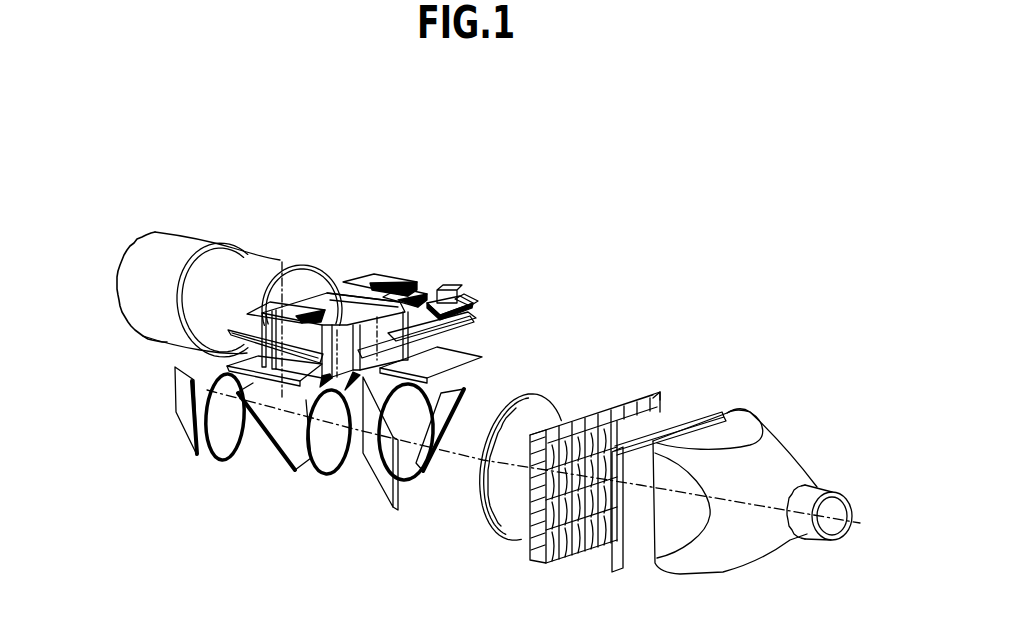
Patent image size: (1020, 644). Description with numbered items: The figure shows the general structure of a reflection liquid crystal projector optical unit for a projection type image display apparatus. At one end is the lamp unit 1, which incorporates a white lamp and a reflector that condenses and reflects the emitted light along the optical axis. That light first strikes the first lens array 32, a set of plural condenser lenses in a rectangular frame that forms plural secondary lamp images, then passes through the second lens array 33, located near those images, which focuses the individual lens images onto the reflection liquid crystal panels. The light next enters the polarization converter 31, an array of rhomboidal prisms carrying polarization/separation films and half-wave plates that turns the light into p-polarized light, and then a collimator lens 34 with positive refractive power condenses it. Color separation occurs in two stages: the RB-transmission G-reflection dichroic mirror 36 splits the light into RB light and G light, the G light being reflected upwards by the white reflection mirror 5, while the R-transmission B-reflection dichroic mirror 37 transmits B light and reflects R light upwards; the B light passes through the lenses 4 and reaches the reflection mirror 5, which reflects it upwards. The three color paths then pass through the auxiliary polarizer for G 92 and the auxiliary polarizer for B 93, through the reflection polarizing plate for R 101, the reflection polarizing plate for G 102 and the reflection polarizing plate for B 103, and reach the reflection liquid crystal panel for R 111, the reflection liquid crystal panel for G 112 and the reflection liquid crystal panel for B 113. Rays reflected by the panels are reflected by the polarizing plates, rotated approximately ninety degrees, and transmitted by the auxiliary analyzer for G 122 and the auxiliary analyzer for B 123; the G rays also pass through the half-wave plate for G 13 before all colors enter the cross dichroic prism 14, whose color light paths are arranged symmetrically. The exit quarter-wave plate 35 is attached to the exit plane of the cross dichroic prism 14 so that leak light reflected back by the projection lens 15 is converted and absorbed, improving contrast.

The lamp unit 1 is at (778, 420).
The lenses 4 is at (222, 452).
The reflection mirror 5 is at (175, 413).
The half-wave plate for G 13 is at (428, 287).
The cross dichroic prism 14 is at (293, 300).
The projection lens 15 is at (180, 233).
The polarization converter 31 is at (530, 548).
The first lens array 32 is at (722, 418).
The second lens array 33 is at (667, 413).
The collimator lens 34 is at (402, 480).
The exit quarter-wave plate 35 is at (280, 277).
The RB-transmission G-reflection dichroic mirror 36 is at (332, 460).
The R-transmission B-reflection dichroic mirror 37 is at (270, 460).
The auxiliary polarizer for G 92 is at (462, 356).
The auxiliary polarizer for B 93 is at (233, 360).
The reflection polarizing plate for R 101 is at (423, 290).
The reflection polarizing plate for G 102 is at (467, 320).
The reflection polarizing plate for B 103 is at (233, 343).
The reflection liquid crystal panel for R 111 is at (366, 280).
The reflection liquid crystal panel for G 112 is at (443, 300).
The reflection liquid crystal panel for B 113 is at (257, 300).
The auxiliary analyzer for G 122 is at (457, 297).
The auxiliary analyzer for B 123 is at (336, 293).